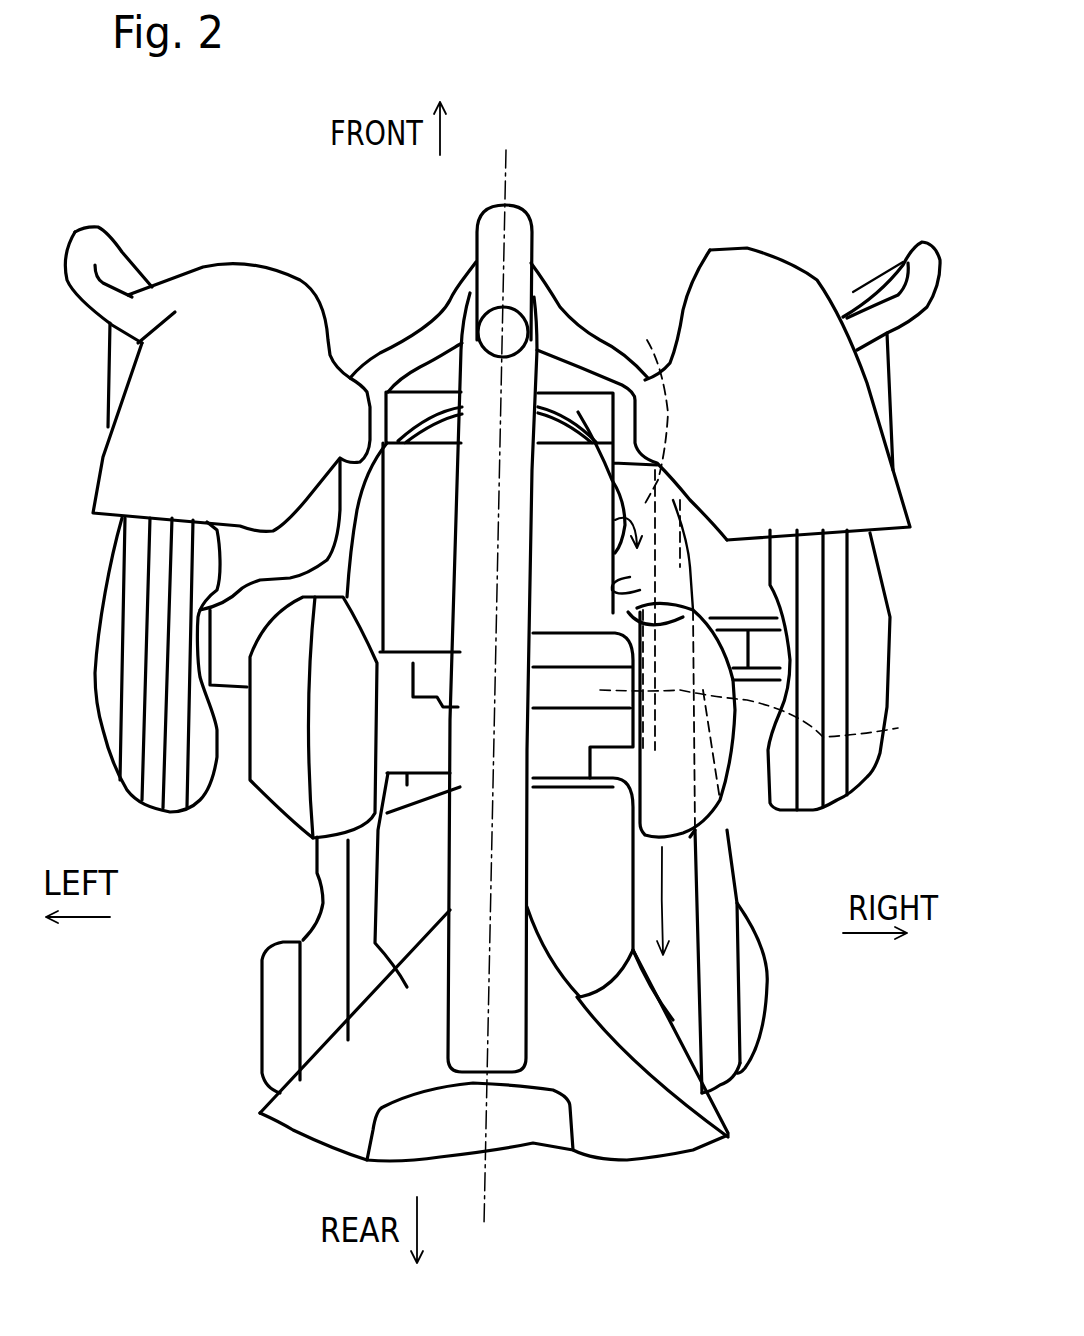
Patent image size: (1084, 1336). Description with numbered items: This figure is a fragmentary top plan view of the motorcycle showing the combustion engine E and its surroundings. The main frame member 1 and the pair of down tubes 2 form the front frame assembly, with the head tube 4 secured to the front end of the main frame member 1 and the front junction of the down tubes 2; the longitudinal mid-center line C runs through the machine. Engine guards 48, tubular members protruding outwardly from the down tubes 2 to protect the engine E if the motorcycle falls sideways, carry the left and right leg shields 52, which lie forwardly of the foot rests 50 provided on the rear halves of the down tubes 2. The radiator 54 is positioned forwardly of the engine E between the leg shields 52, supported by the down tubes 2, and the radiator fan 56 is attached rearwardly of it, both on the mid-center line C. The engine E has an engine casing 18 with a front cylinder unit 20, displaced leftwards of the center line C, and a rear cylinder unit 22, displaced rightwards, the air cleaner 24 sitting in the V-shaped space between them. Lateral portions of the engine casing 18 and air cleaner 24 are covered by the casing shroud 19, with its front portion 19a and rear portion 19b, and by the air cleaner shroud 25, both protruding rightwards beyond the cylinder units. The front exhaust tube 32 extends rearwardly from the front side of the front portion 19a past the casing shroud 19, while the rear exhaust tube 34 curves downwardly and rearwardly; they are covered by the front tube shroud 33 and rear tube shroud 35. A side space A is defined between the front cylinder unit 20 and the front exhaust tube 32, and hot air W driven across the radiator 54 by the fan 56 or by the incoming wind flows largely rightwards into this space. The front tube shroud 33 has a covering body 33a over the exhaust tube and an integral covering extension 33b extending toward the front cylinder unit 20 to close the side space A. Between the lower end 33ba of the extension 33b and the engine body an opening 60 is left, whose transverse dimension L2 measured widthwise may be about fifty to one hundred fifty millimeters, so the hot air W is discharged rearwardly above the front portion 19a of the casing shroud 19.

The main frame member 1 is at (453, 853).
The down tubes 2 is at (463, 270).
The head tube 4 is at (516, 242).
The engine casing 18 is at (755, 896).
The casing shroud 19 is at (727, 1030).
The front portion of the casing shroud 19a is at (771, 719).
The rear portion of the casing shroud 19b is at (723, 1078).
The front cylinder unit 20 is at (370, 537).
The rear cylinder unit 22 is at (387, 940).
The air cleaner 24 is at (245, 803).
The air cleaner shroud 25 is at (280, 787).
The front exhaust tube 32 is at (681, 568).
The front tube shroud 33 is at (702, 524).
The covering body 33a is at (682, 538).
The covering extension 33b is at (660, 553).
The lower end of the covering extension 33ba is at (612, 535).
The rear exhaust tube 34 is at (695, 1015).
The rear tube shroud 35 is at (713, 1113).
The engine guards 48 is at (113, 256).
The foot rests 50 is at (97, 710).
The leg shields 52 is at (290, 268).
The radiator 54 is at (439, 382).
The radiator fan 56 is at (417, 415).
The opening 60 is at (643, 587).
The side space A is at (682, 500).
The longitudinal mid-center line C is at (509, 186).
The combustion engine E is at (297, 898).
The transverse dimension L2 is at (636, 614).
The hot air W is at (663, 873).